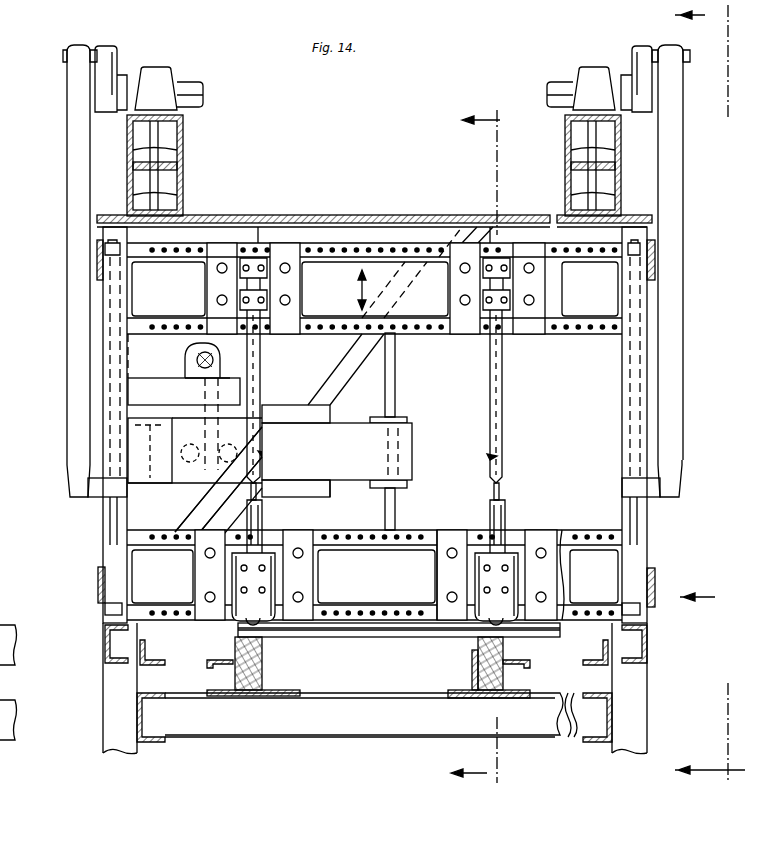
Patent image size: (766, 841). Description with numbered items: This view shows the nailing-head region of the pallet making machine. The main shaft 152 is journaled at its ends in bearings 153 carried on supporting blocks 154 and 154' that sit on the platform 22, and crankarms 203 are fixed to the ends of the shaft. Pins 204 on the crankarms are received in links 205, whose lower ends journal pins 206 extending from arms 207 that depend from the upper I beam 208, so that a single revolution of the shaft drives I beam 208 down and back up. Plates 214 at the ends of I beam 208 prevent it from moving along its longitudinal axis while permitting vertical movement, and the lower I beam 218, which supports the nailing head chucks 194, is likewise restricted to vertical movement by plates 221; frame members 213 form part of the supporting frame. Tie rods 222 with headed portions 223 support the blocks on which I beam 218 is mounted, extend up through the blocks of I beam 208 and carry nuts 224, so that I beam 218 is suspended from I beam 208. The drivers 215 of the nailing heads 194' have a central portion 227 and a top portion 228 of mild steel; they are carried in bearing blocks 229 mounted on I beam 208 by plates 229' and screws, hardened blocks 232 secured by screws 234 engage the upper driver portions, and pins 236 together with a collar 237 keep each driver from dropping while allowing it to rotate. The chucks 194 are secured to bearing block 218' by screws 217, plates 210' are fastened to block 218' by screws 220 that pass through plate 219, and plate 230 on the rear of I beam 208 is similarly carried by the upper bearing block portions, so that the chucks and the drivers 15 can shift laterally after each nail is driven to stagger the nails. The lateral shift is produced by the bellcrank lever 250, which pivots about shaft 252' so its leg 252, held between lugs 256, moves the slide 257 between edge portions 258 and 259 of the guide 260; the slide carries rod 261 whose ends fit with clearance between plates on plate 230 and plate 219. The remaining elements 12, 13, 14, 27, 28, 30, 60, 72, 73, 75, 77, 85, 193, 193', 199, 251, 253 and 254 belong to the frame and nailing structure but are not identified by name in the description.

The block 12 is at (503, 660).
The block / section line 13 is at (262, 660).
The beam 14 is at (343, 637).
The drivers 15 is at (484, 447).
The platform 22 is at (96, 214).
The post 27 is at (137, 721).
The lower beam 28 is at (372, 738).
The post end 30 is at (123, 755).
The bracket 60 is at (140, 661).
The base plate 72 is at (222, 696).
The base plate 73 is at (476, 698).
The bracket 75 is at (215, 666).
The bracket 77 is at (530, 664).
The plate 85 is at (472, 672).
The main shaft 152 is at (190, 82).
The bearings 153 is at (156, 67).
The supporting block 154 is at (374, 165).
The supporting block 154' is at (374, 172).
The pin 193 is at (409, 491).
The pin 193' is at (409, 537).
The nailing head chucks 194 is at (399, 637).
The nailing heads 194' is at (367, 539).
The panel 199 is at (548, 573).
The crankarms 203 is at (105, 48).
The pins 204 is at (66, 56).
The links 205 is at (67, 298).
The pins 206 is at (67, 480).
The arms 207 is at (103, 405).
The I beam 208 is at (380, 215).
The plates 210' is at (375, 578).
The frame members 213 is at (105, 644).
The plates 214 is at (105, 250).
The drivers 215 is at (260, 381).
The screws 217 is at (275, 569).
The I beam 218 is at (388, 566).
The bearing block 218' is at (357, 551).
The plate 219 is at (395, 509).
The screws 220 is at (206, 597).
The plates 221 is at (98, 585).
The tie rods 222 is at (110, 520).
The headed portions 223 is at (105, 608).
The nuts 224 is at (97, 250).
The central portion 227 is at (260, 395).
The top portion 228 is at (242, 286).
The bearing blocks 229 is at (374, 288).
The plates 229' is at (375, 306).
The plate 230 is at (395, 367).
The blocks 232 is at (254, 243).
The screws 234 is at (232, 253).
The pins 236 is at (545, 268).
The collar 237 is at (267, 300).
The bellcrank lever 250 is at (293, 364).
The diagonal beam 251 is at (292, 364).
The leg 252 is at (184, 402).
The shaft 252' is at (185, 358).
The pivot 253 is at (198, 359).
The base 254 is at (186, 379).
The lugs 256 is at (189, 445).
The slide 257 is at (354, 427).
The edge portion 258 is at (314, 422).
The edge portion 259 is at (323, 481).
The guide 260 is at (330, 490).
The rod 261 is at (407, 417).